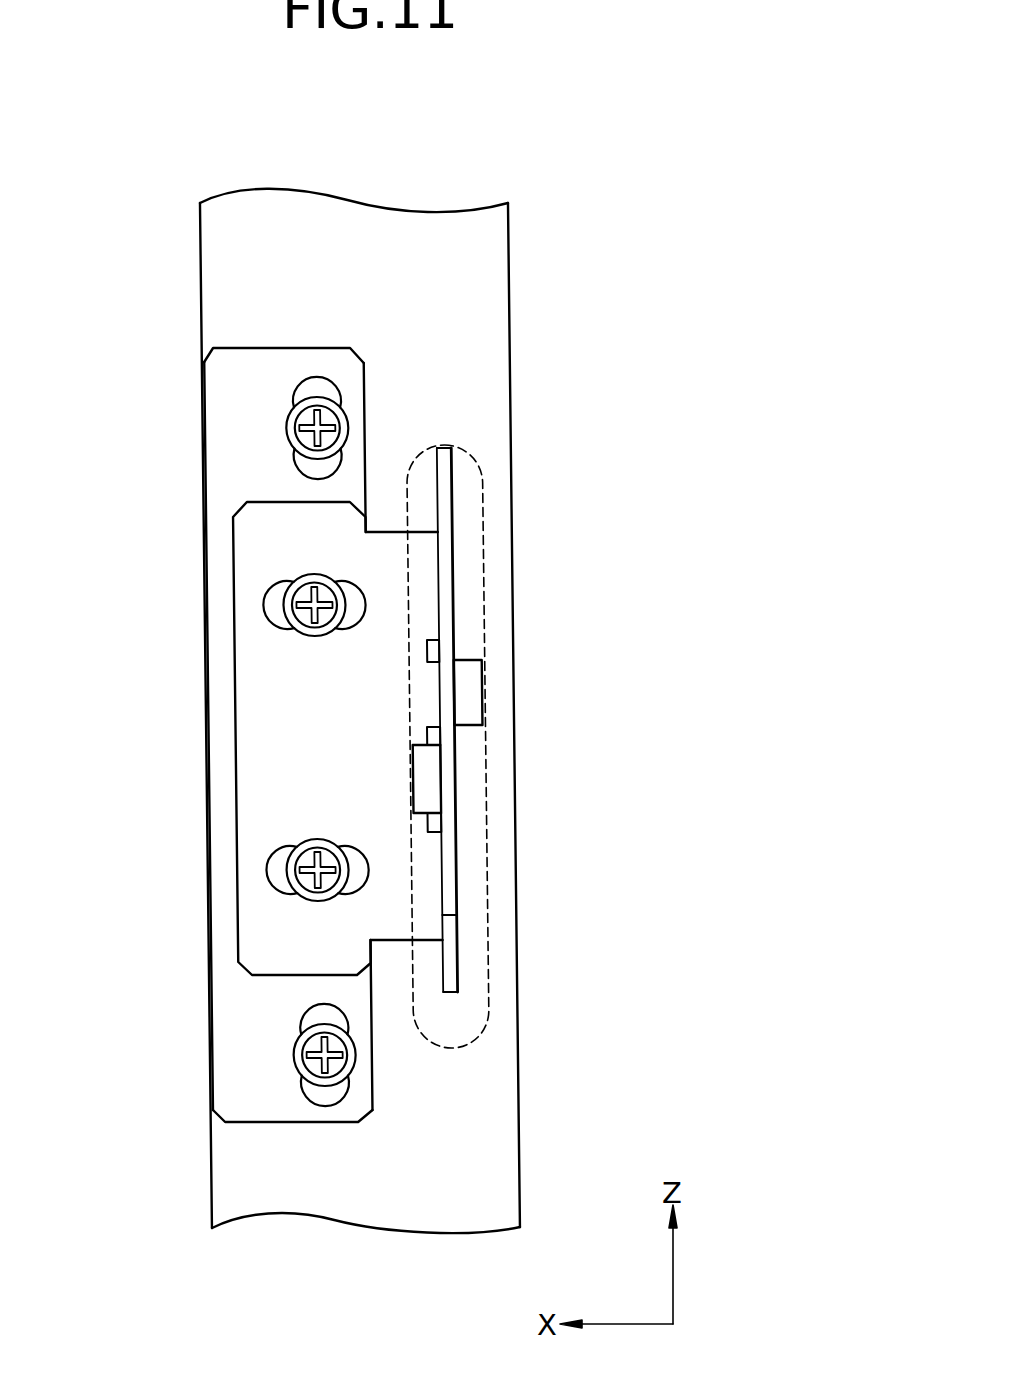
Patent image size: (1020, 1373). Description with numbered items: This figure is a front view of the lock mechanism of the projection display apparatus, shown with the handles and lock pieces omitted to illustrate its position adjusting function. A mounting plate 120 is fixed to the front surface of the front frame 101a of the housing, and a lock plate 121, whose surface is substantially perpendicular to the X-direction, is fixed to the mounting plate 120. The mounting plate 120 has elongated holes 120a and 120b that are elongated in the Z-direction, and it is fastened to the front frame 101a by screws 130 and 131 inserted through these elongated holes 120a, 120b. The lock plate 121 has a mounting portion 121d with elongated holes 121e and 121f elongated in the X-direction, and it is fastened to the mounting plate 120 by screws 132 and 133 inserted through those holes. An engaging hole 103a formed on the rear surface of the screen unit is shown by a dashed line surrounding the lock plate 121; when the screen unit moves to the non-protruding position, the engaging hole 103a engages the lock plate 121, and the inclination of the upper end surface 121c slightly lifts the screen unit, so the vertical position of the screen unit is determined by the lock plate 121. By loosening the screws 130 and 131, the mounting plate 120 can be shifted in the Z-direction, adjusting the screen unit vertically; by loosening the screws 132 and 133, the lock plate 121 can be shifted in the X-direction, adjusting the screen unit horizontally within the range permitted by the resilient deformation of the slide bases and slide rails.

The front frame 101a is at (467, 262).
The mounting plate 120 is at (227, 432).
The elongated hole 120a is at (300, 378).
The elongated hole 120b is at (330, 1105).
The lock plate 121 is at (456, 872).
The upper end surface 121c is at (447, 448).
The mounting portion 121d is at (278, 757).
The elongated hole 121e is at (437, 627).
The elongated hole 121f is at (428, 832).
The engaging hole 103a is at (483, 557).
The screw 130 is at (350, 424).
The screw 131 is at (293, 1058).
The screw 132 is at (288, 607).
The screw 133 is at (287, 870).